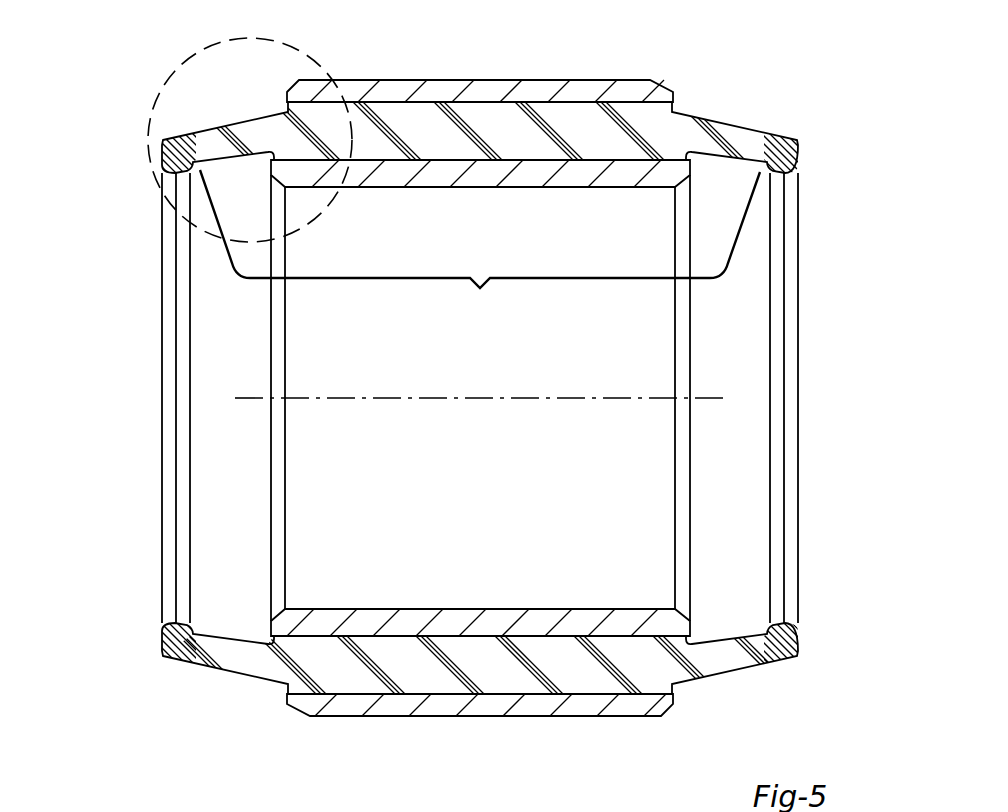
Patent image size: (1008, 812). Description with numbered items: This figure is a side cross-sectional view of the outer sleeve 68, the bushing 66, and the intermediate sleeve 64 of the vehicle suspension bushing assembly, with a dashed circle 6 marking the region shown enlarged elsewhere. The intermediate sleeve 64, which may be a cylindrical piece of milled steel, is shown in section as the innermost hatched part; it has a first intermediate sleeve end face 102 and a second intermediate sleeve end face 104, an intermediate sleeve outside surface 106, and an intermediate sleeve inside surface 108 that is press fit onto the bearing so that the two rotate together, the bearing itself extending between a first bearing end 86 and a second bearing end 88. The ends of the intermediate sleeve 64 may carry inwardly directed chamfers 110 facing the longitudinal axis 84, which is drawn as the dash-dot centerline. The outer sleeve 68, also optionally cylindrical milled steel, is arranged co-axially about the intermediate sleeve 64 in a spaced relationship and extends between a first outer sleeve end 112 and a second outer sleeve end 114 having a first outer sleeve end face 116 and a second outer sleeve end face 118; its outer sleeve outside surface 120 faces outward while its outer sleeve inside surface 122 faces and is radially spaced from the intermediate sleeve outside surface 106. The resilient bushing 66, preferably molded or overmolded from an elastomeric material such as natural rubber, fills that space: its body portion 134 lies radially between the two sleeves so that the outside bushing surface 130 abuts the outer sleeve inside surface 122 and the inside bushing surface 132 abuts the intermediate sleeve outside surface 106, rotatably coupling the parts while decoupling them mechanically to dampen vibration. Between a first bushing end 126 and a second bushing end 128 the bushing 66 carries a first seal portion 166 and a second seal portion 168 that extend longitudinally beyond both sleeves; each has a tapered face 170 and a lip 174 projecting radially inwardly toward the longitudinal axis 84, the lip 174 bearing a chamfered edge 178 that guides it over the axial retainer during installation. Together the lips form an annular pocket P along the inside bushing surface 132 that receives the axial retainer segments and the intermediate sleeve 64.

The detail circle for FIG. 6 is at (153, 107).
The intermediate sleeve 64 is at (597, 190).
The bushing 66 is at (799, 139).
The outer sleeve 68 is at (536, 95).
The longitudinal axis 84 is at (513, 398).
The first bearing end 86 is at (660, 608).
The second bearing end 88 is at (325, 612).
The first intermediate sleeve end face 102 is at (690, 630).
The second intermediate sleeve end face 104 is at (268, 637).
The intermediate sleeve outside surface 106 is at (407, 639).
The intermediate sleeve inside surface 108 is at (432, 606).
The inwardly directed chamfers 110 is at (290, 470).
The first outer sleeve end 112 is at (673, 710).
The second outer sleeve end 114 is at (339, 707).
The first outer sleeve end face 116 is at (674, 697).
The second outer sleeve end face 118 is at (287, 706).
The outer sleeve outside surface 120 is at (491, 97).
The outer sleeve inside surface 122 is at (482, 104).
The first bushing end 126 is at (752, 333).
The second bushing end 128 is at (213, 338).
The outside bushing surface 130 is at (393, 100).
The inside bushing surface 132 is at (429, 163).
The body portion 134 is at (580, 96).
The first seal portion 166 is at (737, 140).
The second seal portion 168 is at (253, 130).
The tapered face 170 is at (709, 116).
The lip 174 is at (778, 178).
The chamfered edge 178 is at (167, 171).
The annular pocket P is at (480, 243).